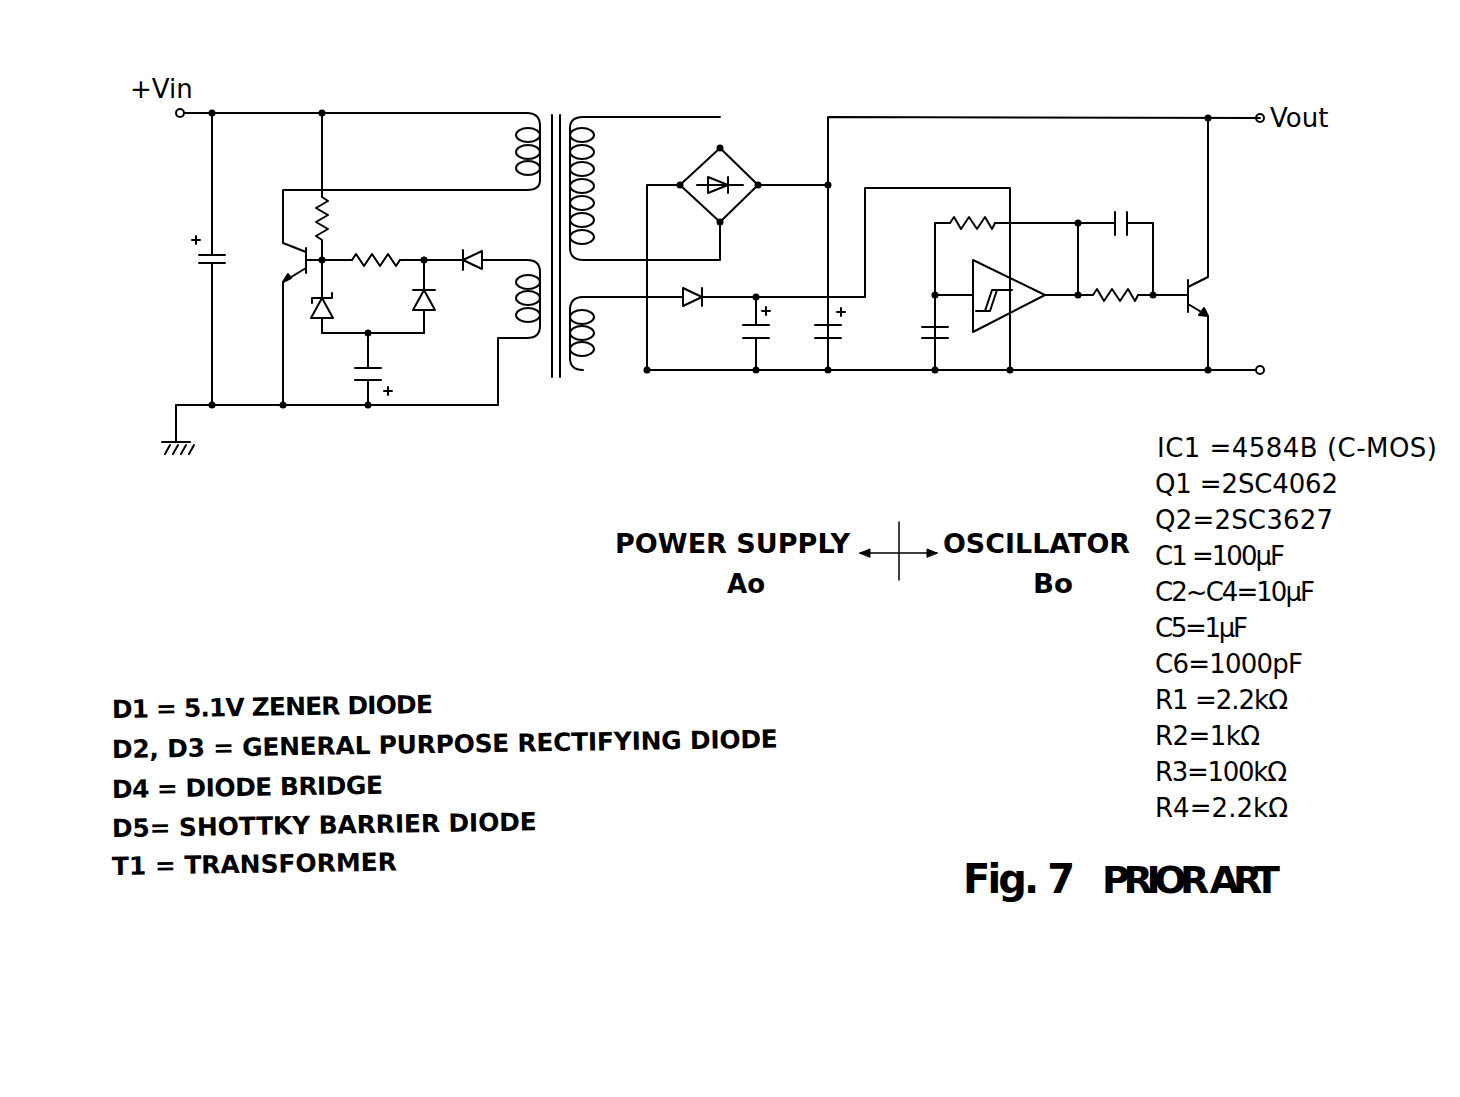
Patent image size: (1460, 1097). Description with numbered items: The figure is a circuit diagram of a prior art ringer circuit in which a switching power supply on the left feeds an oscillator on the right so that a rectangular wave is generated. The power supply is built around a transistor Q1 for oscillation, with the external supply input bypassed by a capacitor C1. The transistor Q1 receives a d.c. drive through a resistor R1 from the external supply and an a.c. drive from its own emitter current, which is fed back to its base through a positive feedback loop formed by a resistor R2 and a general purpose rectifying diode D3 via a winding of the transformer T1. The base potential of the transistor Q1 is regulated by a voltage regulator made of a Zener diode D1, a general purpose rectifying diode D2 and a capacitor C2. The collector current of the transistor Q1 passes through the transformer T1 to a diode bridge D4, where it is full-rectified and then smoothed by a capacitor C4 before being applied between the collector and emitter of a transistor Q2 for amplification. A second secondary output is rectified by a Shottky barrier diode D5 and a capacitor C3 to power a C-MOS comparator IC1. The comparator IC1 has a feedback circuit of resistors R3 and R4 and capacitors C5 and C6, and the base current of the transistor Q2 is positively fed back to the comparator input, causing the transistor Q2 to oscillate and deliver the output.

The transformer T1 is at (438, 240).
The capacitor C1 is at (195, 259).
The capacitor C2 is at (357, 369).
The capacitor C3 is at (772, 333).
The capacitor C4 is at (845, 334).
The capacitor C5 is at (950, 347).
The capacitor C6 is at (1123, 204).
The resistor R1 is at (339, 186).
The resistor R2 is at (377, 242).
The resistor R3 is at (976, 239).
The resistor R4 is at (1118, 312).
The Zener diode D1 is at (340, 296).
The general purpose rectifying diode D2 is at (441, 296).
The general purpose rectifying diode D3 is at (479, 242).
The diode bridge D4 is at (724, 173).
The Shottky barrier diode D5 is at (696, 316).
The transistor for oscillation Q1 is at (287, 324).
The transistor for amplification Q2 is at (1218, 244).
The C-MOS comparator IC1 is at (1015, 300).